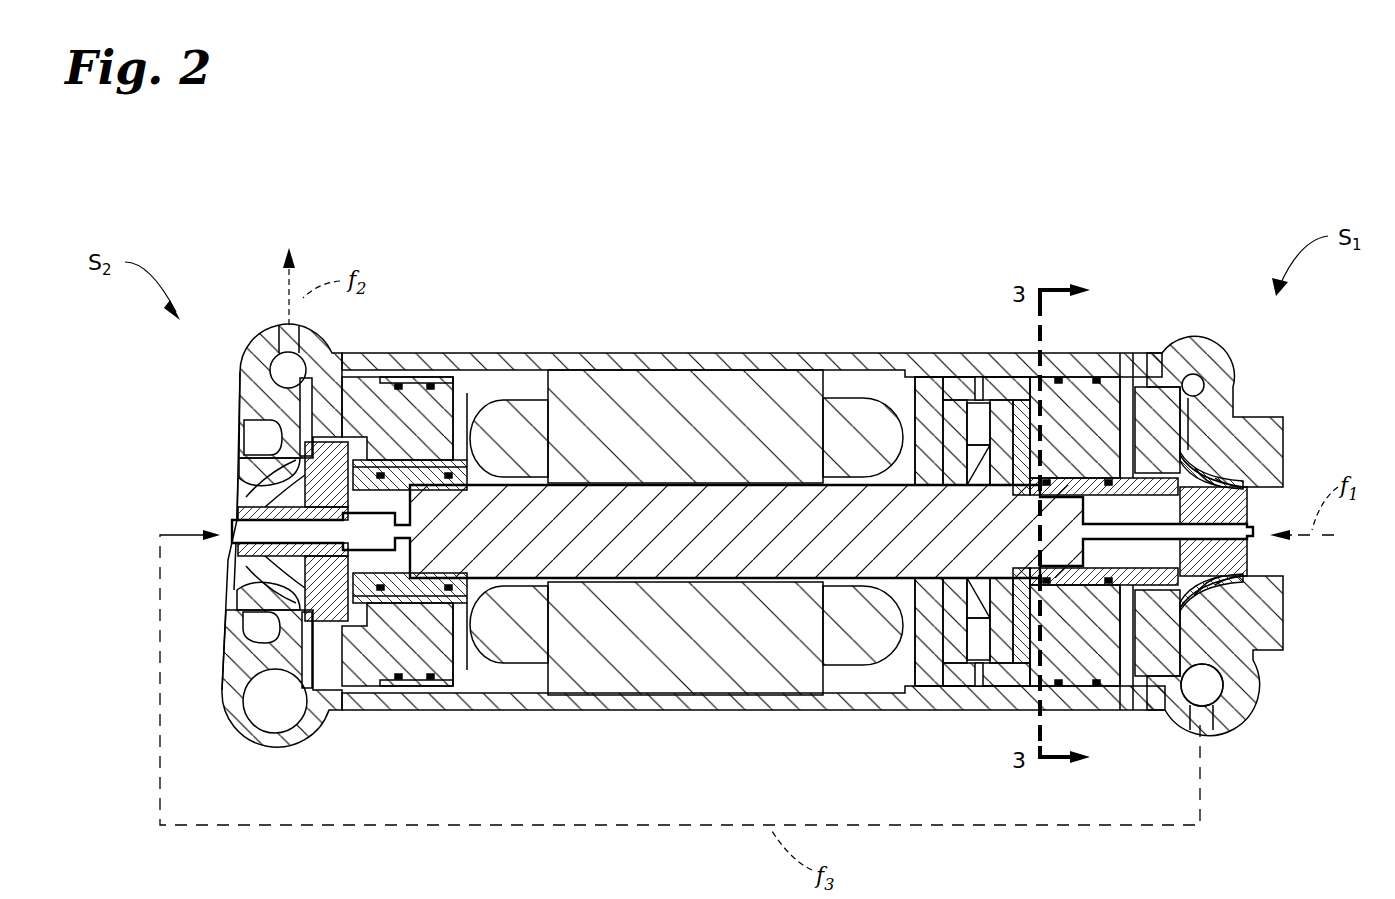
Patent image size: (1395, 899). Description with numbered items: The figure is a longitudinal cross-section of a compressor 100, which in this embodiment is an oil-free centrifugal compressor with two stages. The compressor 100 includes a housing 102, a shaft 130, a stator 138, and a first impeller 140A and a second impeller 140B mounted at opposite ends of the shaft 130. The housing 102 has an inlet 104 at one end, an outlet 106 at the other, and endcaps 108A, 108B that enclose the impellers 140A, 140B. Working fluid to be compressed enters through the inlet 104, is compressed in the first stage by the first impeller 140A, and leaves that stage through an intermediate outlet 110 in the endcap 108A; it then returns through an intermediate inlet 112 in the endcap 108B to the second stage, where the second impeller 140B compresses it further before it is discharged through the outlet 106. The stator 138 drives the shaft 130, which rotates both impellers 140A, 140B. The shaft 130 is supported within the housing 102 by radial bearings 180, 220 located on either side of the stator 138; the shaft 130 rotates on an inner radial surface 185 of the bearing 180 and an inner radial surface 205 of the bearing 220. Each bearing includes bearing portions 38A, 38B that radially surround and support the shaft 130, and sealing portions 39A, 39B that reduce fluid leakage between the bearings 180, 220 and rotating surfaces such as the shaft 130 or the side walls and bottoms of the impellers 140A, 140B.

The compressor 100 is at (776, 262).
The housing 102 is at (618, 352).
The inlet 104 is at (1283, 555).
The outlet 106 is at (290, 330).
The endcap 108A is at (1242, 690).
The endcap 108B is at (232, 748).
The intermediate outlet 110 is at (1205, 715).
The intermediate inlet 112 is at (236, 500).
The shaft 130 is at (563, 567).
The stator 138 is at (655, 680).
The first impeller 140A is at (1215, 478).
The second impeller 140B is at (243, 470).
The radial bearing 180 is at (440, 495).
The inner radial surface 185 is at (393, 490).
The inner radial surface 205 is at (1090, 480).
The radial bearing 220 is at (1060, 480).
The bearing portion 38A is at (1073, 590).
The bearing portion 38B is at (420, 577).
The sealing portion 39A is at (1140, 590).
The sealing portion 39B is at (343, 630).